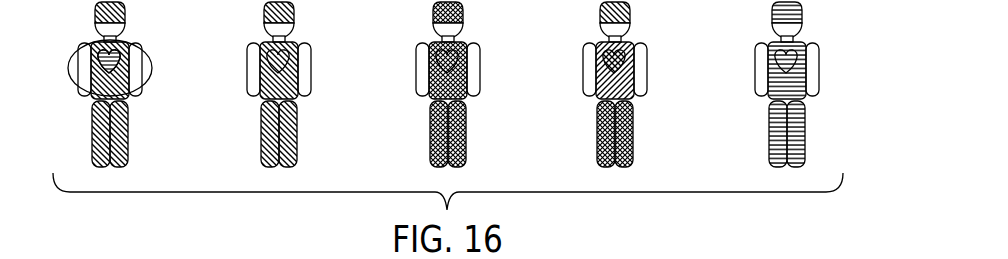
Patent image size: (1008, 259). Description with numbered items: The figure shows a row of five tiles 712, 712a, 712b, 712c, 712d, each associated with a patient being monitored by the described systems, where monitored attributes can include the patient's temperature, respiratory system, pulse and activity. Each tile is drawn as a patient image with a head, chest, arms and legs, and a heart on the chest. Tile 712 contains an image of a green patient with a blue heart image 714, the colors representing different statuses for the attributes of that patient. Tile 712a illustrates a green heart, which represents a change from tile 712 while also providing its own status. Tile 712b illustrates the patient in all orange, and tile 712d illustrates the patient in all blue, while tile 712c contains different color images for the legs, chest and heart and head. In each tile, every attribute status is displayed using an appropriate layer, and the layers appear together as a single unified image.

The tile 712 is at (97, 140).
The blue heart image 714 is at (73, 58).
The tile 712a is at (269, 139).
The tile 712b is at (466, 140).
The tile 712c is at (634, 140).
The tile 712d is at (805, 140).